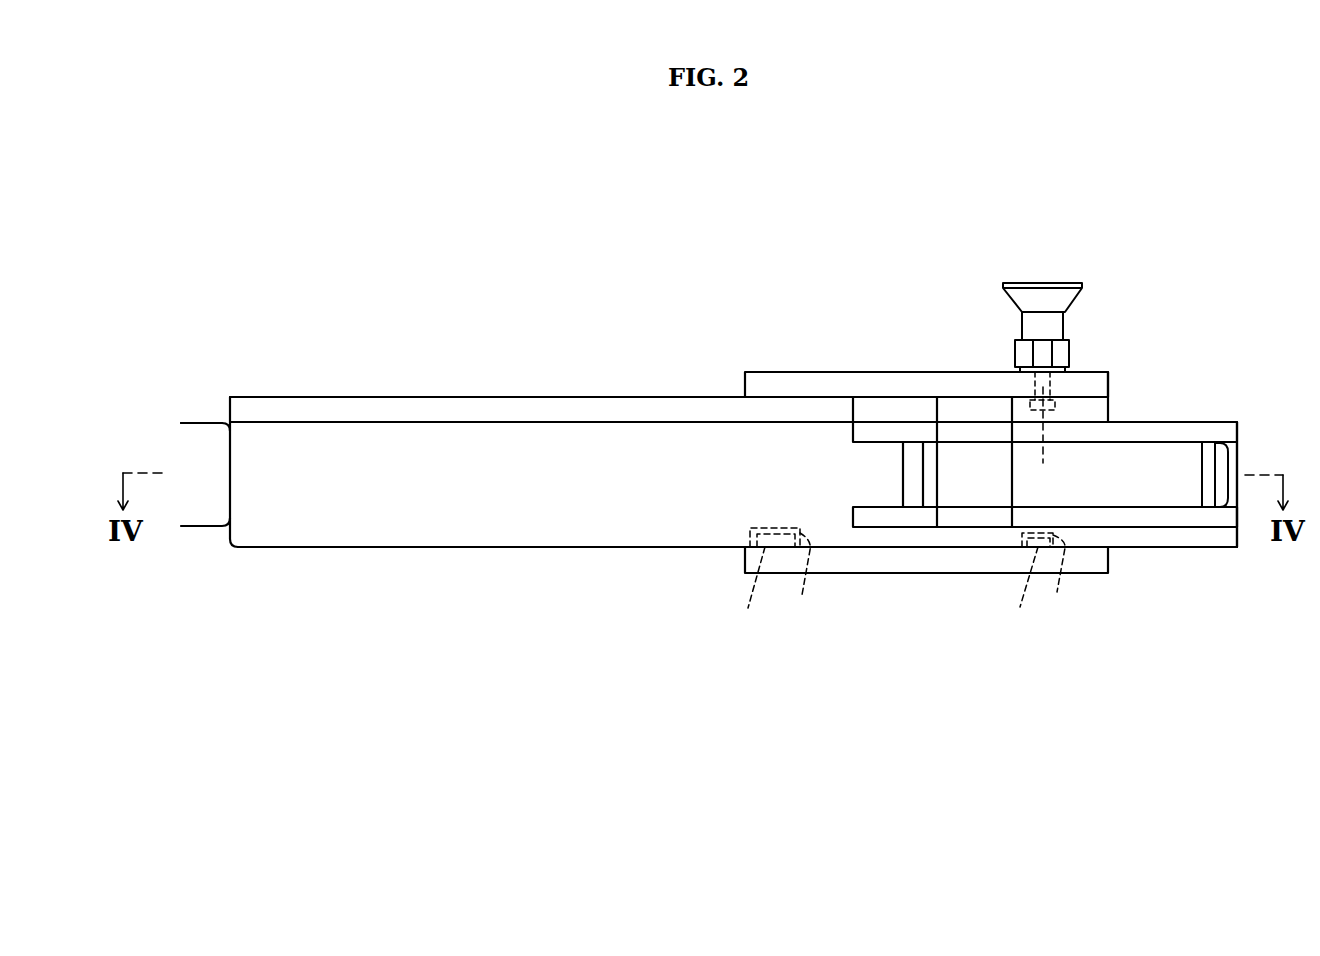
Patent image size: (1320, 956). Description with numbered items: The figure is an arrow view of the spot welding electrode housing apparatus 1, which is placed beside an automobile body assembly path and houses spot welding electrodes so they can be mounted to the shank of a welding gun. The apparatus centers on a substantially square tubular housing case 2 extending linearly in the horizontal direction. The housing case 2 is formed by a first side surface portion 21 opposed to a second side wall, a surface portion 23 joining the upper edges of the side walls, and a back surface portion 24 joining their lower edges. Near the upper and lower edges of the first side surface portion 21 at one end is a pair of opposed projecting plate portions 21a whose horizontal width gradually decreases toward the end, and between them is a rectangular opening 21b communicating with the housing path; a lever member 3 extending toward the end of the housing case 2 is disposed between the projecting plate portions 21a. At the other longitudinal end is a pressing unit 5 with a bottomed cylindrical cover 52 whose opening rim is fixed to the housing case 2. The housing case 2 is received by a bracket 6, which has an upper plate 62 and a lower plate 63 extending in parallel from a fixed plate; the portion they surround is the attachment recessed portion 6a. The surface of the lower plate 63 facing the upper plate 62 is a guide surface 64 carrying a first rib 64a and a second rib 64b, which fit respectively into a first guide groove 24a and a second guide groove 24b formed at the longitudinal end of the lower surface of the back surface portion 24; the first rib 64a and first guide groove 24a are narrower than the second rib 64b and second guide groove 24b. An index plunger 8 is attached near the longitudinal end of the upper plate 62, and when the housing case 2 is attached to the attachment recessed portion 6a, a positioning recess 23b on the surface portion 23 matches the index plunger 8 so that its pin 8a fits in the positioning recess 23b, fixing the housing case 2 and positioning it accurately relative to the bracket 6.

The spot welding electrode housing apparatus 1 is at (1161, 215).
The housing case 2 is at (1183, 412).
The lever member 3 is at (1165, 519).
The pressing unit 5 is at (183, 401).
The cylindrical cover 52 is at (213, 412).
The bracket 6 is at (796, 368).
The attachment recessed portion 6a is at (832, 397).
The index plunger 8 is at (1043, 270).
The pin 8a is at (1057, 403).
The first side surface portion 21 is at (567, 534).
The projecting plate portions 21a is at (903, 443).
The opening 21b is at (1222, 474).
The surface portion 23 is at (579, 391).
The positioning recess 23b is at (1055, 444).
The back surface portion 24 is at (680, 557).
The first guide groove 24a is at (1035, 586).
The second guide groove 24b is at (771, 585).
The upper plate 62 is at (948, 372).
The lower plate 63 is at (948, 575).
The guide surface 64 is at (973, 536).
The first rib 64a is at (1061, 575).
The second rib 64b is at (797, 572).